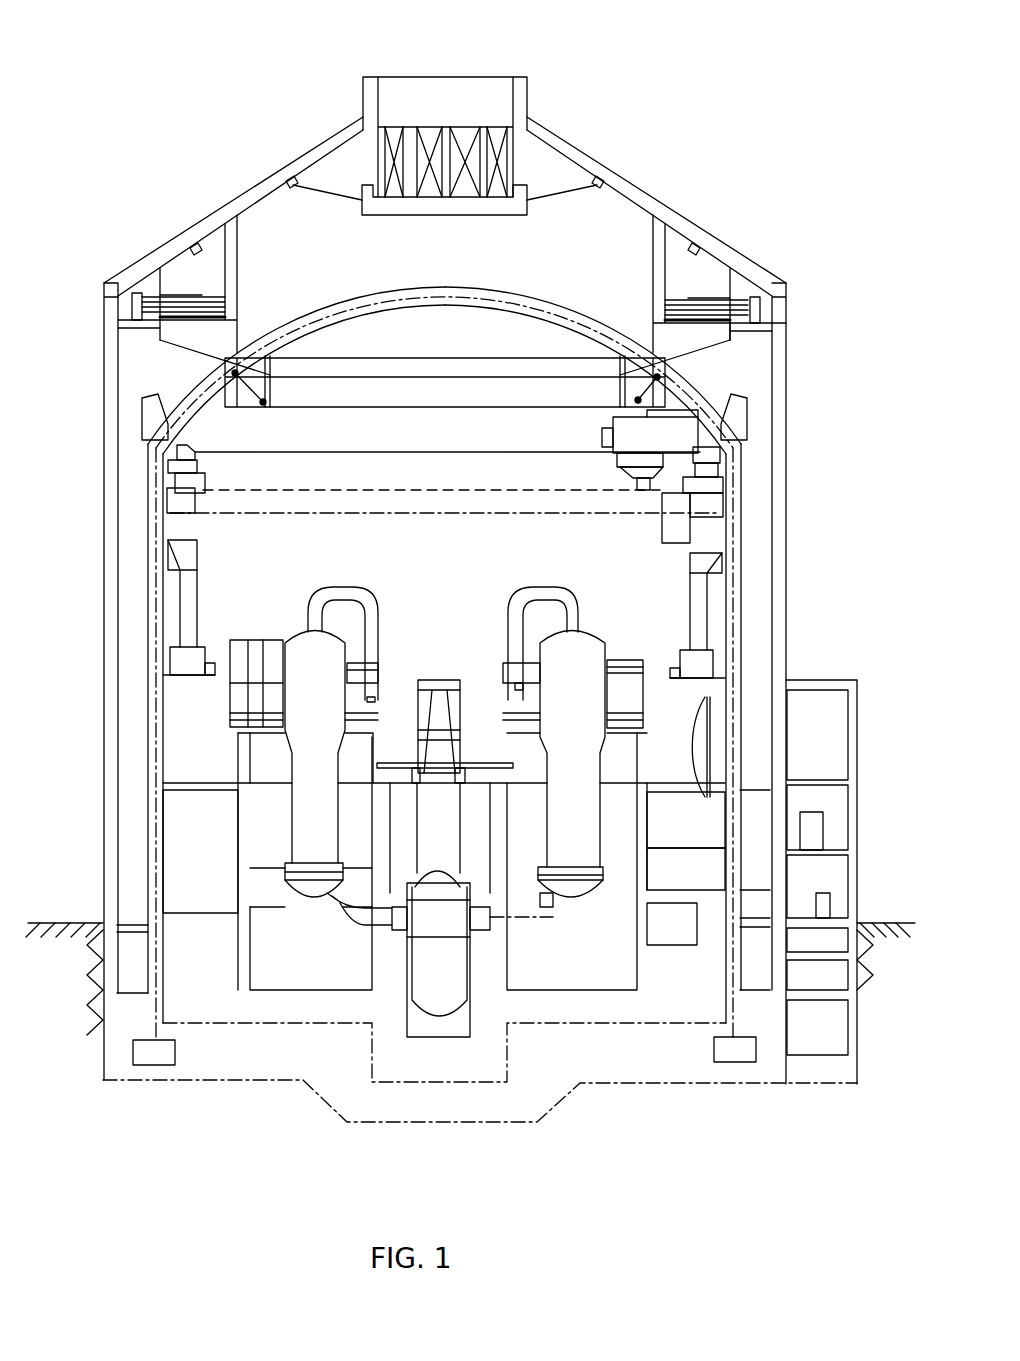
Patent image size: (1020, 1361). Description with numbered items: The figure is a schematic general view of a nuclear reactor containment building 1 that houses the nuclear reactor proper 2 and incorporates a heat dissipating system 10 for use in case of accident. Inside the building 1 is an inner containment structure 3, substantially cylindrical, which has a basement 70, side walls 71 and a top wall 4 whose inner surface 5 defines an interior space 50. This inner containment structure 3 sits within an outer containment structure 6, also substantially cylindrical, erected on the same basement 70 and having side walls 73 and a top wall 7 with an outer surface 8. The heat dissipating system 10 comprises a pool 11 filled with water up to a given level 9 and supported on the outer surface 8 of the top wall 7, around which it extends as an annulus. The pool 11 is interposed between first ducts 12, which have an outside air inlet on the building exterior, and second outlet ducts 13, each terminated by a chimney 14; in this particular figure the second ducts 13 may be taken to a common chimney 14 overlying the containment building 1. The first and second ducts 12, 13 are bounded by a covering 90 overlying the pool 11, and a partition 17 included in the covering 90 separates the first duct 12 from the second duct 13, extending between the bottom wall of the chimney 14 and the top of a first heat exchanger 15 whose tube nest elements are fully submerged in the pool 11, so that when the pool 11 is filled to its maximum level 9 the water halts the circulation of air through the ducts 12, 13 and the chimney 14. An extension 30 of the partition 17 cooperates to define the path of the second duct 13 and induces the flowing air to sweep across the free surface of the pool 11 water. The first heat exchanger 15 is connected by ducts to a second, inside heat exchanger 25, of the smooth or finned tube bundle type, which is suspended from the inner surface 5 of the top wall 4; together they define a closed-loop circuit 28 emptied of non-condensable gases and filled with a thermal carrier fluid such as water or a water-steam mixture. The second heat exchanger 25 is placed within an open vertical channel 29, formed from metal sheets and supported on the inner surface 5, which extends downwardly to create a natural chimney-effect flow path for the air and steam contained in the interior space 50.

The nuclear reactor containment building 1 is at (700, 90).
The nuclear reactor proper 2 is at (470, 635).
The inner containment structure 3 is at (737, 603).
The top wall 4 is at (362, 303).
The inner surface 5 is at (510, 310).
The outer containment structure 6 is at (718, 600).
The top wall 7 is at (334, 293).
The outer surface 8 is at (392, 287).
The water level 9 is at (675, 300).
The heat dissipating system 10 is at (735, 373).
The pool 11 is at (228, 313).
The first ducts 12 is at (107, 306).
The second outlet ducts 13 is at (210, 243).
The chimney 14 is at (487, 86).
The first heat exchanger 15 is at (147, 313).
The partition 17 is at (160, 272).
The second heat exchanger 25 is at (265, 398).
The closed-loop circuit 28 is at (165, 348).
The open vertical channel 29 is at (240, 398).
The extension of the partition 30 is at (700, 300).
The interior space 50 is at (380, 576).
The basement 70 is at (130, 1013).
The side walls 71 is at (150, 718).
The side walls 73 is at (104, 652).
The covering 90 is at (286, 176).